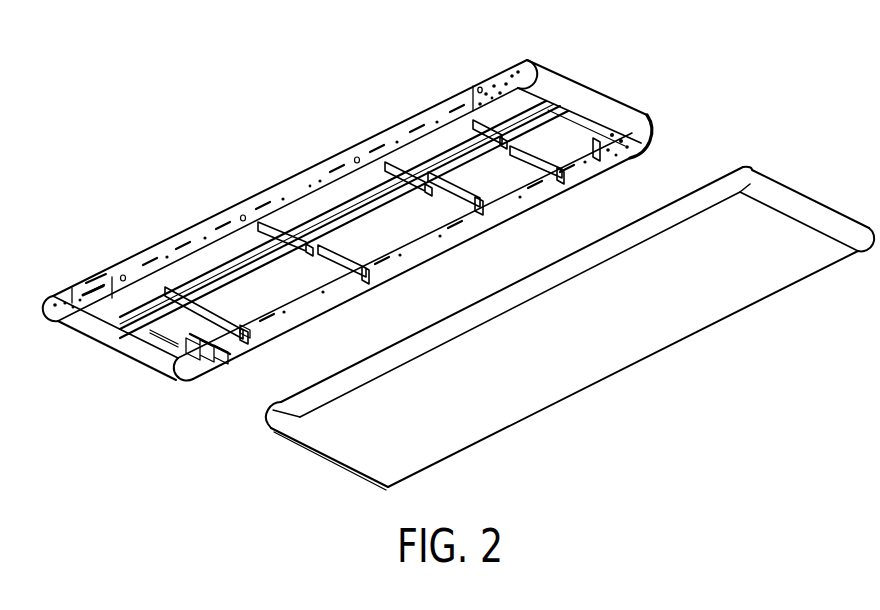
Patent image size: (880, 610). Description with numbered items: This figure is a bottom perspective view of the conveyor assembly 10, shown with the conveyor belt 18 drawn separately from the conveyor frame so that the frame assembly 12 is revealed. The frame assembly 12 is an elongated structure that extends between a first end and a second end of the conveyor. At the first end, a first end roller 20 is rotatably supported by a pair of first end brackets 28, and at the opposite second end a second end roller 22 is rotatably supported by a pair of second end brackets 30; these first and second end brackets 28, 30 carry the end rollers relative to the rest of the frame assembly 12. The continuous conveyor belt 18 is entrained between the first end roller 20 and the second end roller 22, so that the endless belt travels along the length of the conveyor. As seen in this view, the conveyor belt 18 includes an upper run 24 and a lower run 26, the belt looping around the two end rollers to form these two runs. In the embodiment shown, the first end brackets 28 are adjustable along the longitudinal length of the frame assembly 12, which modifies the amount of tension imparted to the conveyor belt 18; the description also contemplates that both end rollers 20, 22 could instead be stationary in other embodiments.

The conveyor assembly 10 is at (684, 62).
The frame assembly 12 is at (259, 182).
The conveyor belt 18 is at (659, 199).
The first end roller 20 is at (85, 335).
The second end roller 22 is at (556, 71).
The upper run 24 is at (503, 287).
The lower run 26 is at (706, 336).
The first end brackets 28 is at (74, 293).
The second end brackets 30 is at (509, 64).